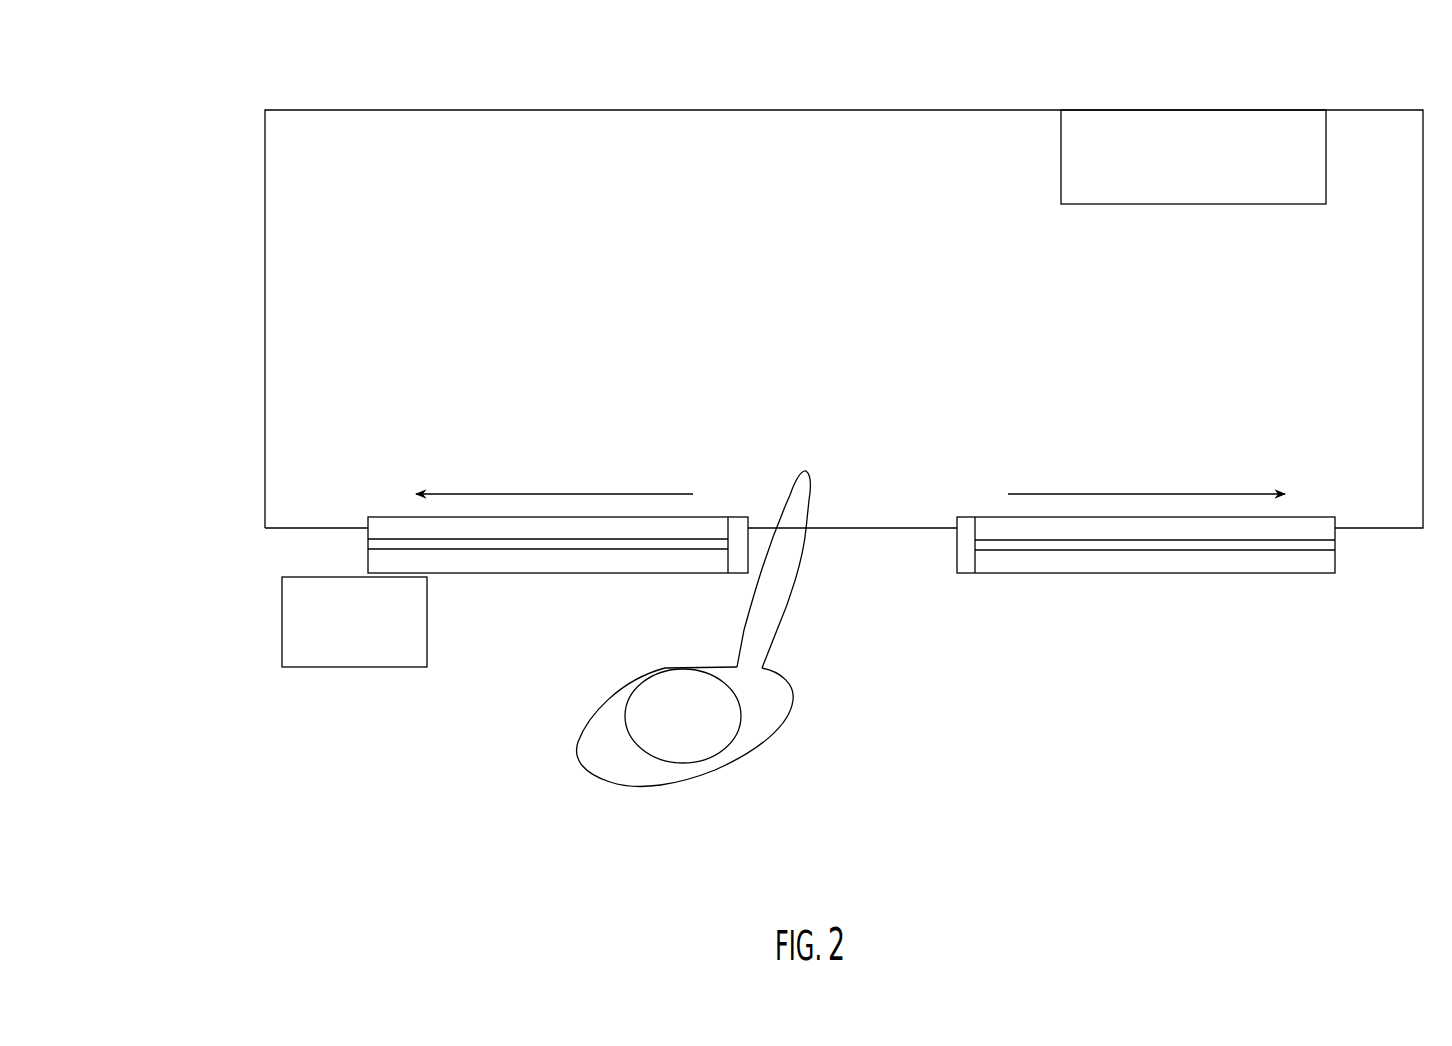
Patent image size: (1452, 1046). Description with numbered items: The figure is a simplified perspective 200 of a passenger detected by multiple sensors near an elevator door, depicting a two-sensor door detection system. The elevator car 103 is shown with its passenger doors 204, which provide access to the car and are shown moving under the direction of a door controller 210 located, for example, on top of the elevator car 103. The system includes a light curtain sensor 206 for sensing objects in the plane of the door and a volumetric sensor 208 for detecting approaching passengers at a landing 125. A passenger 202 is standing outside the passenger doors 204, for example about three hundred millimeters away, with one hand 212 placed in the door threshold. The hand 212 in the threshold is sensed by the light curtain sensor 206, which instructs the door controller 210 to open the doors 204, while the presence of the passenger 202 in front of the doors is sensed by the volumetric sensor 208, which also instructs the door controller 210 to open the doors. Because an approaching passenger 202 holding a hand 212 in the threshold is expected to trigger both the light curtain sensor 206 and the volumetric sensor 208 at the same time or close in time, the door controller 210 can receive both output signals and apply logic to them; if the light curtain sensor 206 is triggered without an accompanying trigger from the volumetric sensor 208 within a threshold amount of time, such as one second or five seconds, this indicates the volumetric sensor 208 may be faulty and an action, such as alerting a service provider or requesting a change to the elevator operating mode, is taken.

The simplified perspective 200 is at (146, 100).
The elevator car 103 is at (698, 110).
The door controller 210 is at (1210, 188).
The passenger doors 204 is at (572, 574).
The light curtain sensor 206 is at (740, 517).
The volumetric sensor 208 is at (427, 648).
The hand 212 is at (808, 512).
The passenger 202 is at (782, 632).
The landing 125 is at (836, 889).